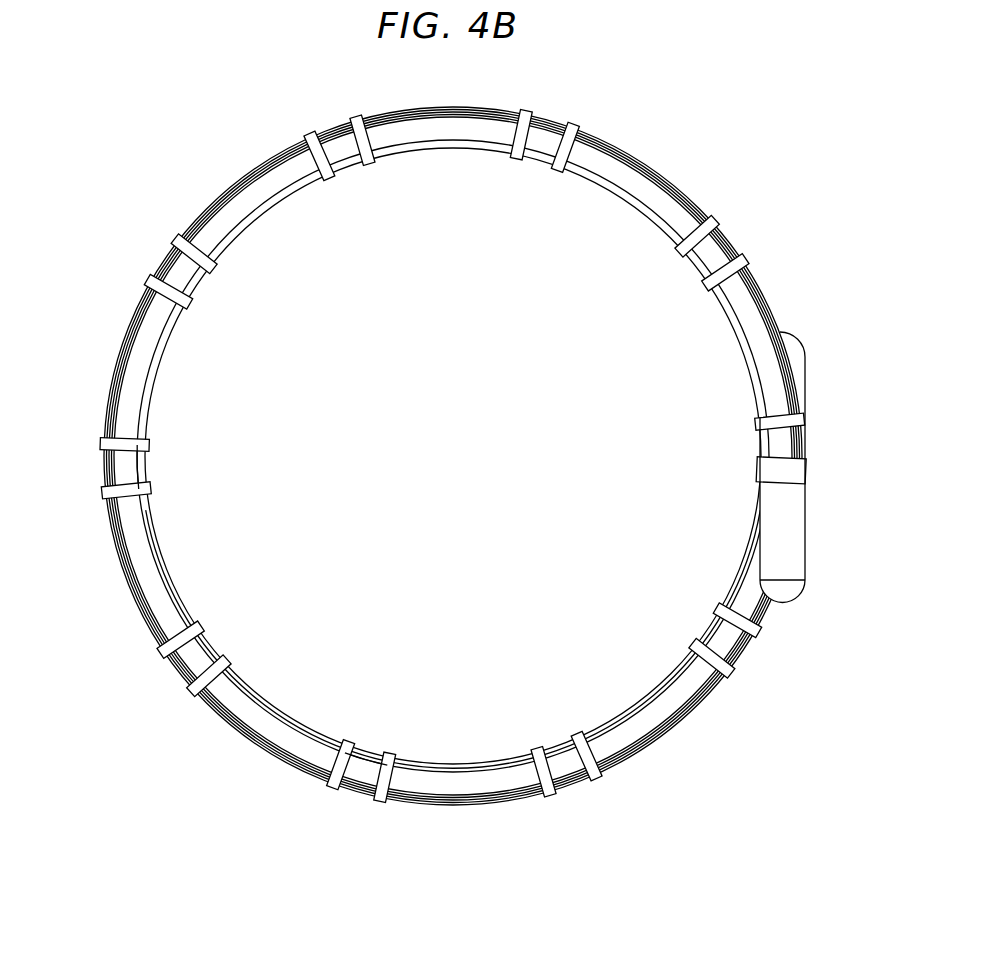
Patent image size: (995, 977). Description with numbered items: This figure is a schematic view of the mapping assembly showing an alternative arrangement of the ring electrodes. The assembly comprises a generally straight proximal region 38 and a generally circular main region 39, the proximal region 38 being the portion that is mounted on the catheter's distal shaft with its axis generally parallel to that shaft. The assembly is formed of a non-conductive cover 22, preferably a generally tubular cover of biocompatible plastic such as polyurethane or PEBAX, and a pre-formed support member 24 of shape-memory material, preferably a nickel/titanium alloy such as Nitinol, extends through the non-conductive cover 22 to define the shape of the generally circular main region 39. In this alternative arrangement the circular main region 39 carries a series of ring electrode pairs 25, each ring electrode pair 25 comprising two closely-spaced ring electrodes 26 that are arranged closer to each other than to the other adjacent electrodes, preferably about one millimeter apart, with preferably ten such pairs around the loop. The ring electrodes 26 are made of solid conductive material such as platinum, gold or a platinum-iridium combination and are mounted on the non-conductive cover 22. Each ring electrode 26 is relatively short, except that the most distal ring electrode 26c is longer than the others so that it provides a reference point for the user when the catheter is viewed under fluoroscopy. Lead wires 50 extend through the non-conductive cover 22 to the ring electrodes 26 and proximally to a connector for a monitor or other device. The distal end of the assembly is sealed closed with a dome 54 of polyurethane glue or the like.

The non-conductive cover 22 is at (265, 757).
The support member 24 is at (395, 132).
The ring electrode pair 25 is at (158, 498).
The ring electrode 26 is at (103, 443).
The most distal ring electrode 26c is at (772, 477).
The proximal region 38 is at (812, 352).
The generally circular main region 39 is at (223, 192).
The lead wire 50 is at (167, 583).
The dome 54 is at (783, 590).